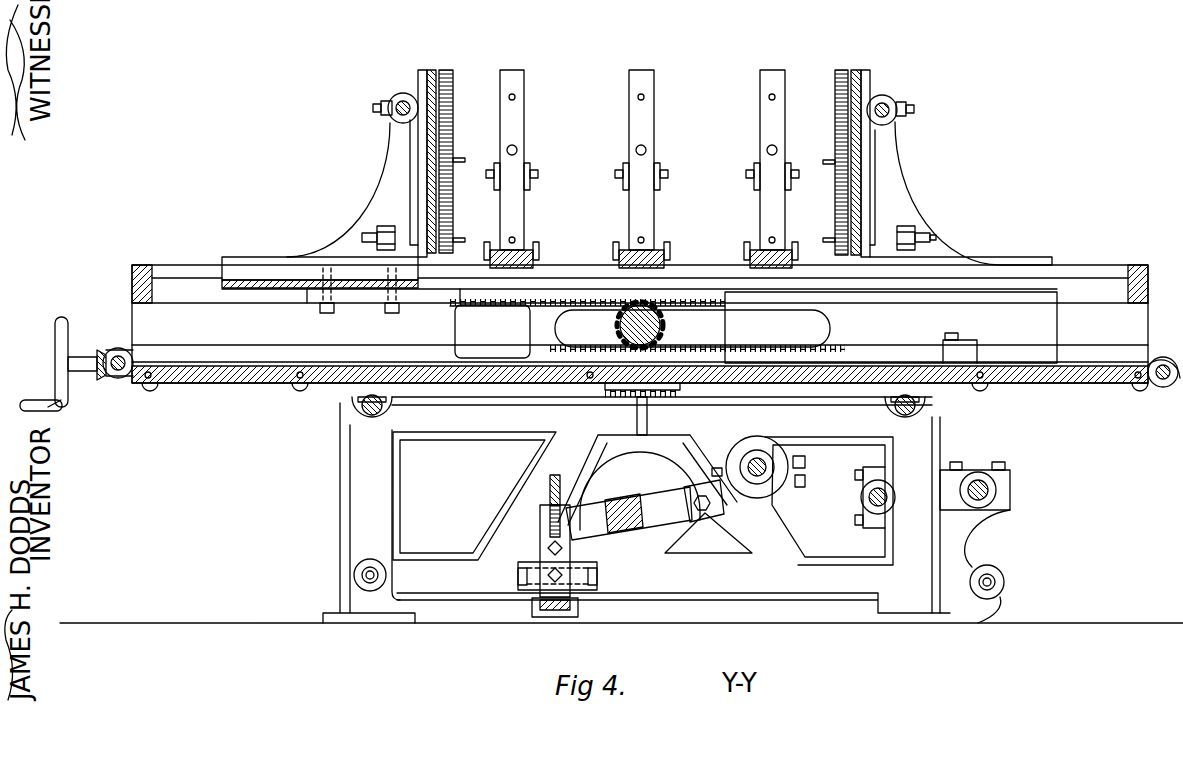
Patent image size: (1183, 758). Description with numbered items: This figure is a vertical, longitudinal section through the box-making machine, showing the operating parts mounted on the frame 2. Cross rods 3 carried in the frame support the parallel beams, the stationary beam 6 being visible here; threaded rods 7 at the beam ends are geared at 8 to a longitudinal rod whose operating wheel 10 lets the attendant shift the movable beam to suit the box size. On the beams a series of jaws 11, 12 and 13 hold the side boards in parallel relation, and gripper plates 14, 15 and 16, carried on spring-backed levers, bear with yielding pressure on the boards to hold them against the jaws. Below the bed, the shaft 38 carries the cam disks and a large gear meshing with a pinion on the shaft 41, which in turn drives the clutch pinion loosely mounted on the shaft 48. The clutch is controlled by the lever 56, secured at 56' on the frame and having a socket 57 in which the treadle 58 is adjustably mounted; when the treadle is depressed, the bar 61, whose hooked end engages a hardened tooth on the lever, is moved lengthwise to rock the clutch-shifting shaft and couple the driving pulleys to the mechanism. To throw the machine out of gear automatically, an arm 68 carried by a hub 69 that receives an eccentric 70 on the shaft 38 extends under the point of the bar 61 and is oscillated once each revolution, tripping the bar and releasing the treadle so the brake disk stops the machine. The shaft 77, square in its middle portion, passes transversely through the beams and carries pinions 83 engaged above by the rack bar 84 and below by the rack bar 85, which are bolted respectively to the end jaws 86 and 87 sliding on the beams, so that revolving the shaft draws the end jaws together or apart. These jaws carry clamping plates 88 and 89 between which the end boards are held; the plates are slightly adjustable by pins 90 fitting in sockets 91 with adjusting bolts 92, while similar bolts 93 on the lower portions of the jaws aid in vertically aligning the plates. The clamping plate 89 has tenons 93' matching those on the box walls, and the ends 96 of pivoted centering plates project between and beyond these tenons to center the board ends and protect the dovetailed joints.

The frame 2 is at (347, 462).
The cross rods 3 is at (366, 411).
The beam 6 is at (225, 381).
The threaded rods 7 is at (117, 379).
The gearing 8 is at (101, 381).
The operating wheel 10 is at (58, 358).
The jaw 11 is at (770, 258).
The jaw 12 is at (640, 258).
The jaw 13 is at (520, 258).
The gripper plate 14 is at (767, 126).
The gripper plate 15 is at (667, 133).
The gripper plate 16 is at (522, 133).
The shaft 38 is at (755, 463).
The shaft 41 is at (883, 503).
The shaft 48 is at (980, 487).
The lever 56 is at (533, 551).
The pivot of lever 56' is at (528, 578).
The socket 57 is at (542, 612).
The treadle 58 is at (575, 612).
The bar 61 is at (548, 483).
The arm 68 is at (645, 520).
The hub 69 is at (745, 508).
The eccentric 70 is at (772, 490).
The shaft 77 is at (645, 332).
The pinions 83 is at (663, 323).
The rack bar 84 is at (722, 300).
The rack bar 85 is at (580, 343).
The end jaw 86 is at (388, 173).
The end jaw 87 is at (912, 192).
The clamping plate 88 is at (432, 72).
The clamping plate 89 is at (858, 82).
The pins 90 is at (892, 118).
The sockets 91 is at (897, 122).
The adjusting bolts 92 is at (915, 109).
The bolts 93 is at (952, 231).
The tenons 93' is at (483, 144).
The ends of centering plates 96 is at (838, 163).